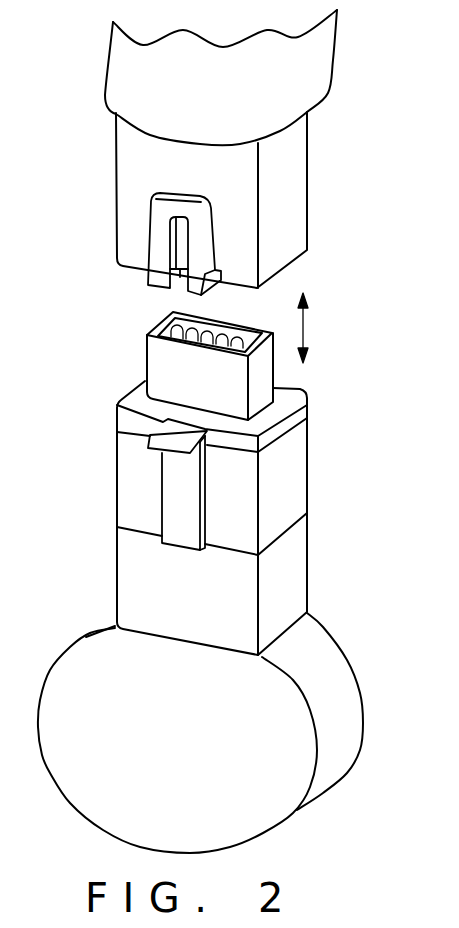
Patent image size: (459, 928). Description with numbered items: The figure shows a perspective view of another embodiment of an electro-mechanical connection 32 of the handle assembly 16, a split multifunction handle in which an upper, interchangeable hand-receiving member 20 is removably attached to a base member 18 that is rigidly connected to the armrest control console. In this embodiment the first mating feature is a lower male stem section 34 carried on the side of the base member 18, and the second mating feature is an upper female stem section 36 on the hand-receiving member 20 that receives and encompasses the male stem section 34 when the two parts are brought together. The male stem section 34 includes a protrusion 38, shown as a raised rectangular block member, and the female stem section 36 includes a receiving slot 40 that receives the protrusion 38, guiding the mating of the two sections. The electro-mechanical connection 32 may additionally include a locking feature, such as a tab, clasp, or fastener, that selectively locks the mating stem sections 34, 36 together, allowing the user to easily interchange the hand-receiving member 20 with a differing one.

The handle assembly 16 is at (332, 169).
The base member 18 is at (327, 652).
The hand-receiving member 20 is at (117, 108).
The electro-mechanical connection 32 is at (123, 323).
The lower male stem section 34 is at (298, 472).
The upper female stem section 36 is at (298, 210).
The protrusion 38 is at (178, 469).
The receiving slot 40 is at (147, 250).